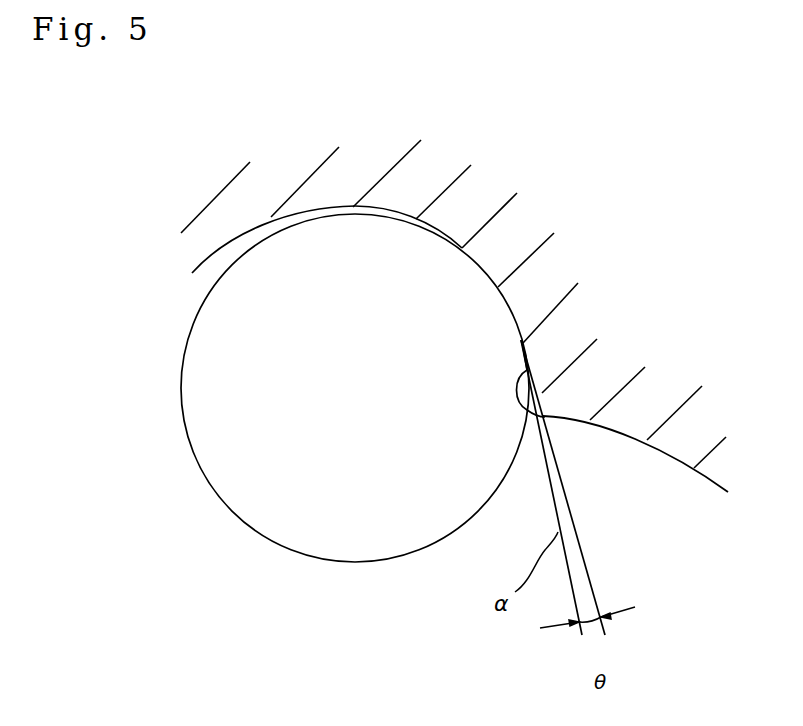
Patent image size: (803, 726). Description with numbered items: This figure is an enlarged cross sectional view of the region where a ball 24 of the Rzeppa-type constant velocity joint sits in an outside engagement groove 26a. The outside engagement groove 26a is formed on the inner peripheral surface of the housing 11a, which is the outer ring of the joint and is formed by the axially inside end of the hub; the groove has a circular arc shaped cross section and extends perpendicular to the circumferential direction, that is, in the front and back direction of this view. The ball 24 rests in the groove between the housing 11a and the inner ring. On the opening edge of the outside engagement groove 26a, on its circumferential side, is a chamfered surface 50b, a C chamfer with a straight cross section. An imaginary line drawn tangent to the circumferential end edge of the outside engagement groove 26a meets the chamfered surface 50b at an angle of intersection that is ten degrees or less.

The ball 24 is at (213, 391).
The outside engagement groove 26a is at (210, 254).
The housing 11a is at (528, 233).
The chamfered surface 50b is at (545, 417).